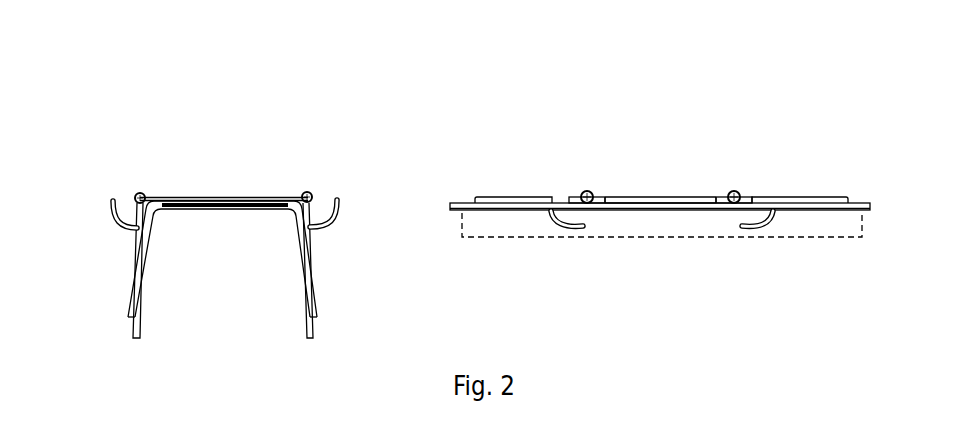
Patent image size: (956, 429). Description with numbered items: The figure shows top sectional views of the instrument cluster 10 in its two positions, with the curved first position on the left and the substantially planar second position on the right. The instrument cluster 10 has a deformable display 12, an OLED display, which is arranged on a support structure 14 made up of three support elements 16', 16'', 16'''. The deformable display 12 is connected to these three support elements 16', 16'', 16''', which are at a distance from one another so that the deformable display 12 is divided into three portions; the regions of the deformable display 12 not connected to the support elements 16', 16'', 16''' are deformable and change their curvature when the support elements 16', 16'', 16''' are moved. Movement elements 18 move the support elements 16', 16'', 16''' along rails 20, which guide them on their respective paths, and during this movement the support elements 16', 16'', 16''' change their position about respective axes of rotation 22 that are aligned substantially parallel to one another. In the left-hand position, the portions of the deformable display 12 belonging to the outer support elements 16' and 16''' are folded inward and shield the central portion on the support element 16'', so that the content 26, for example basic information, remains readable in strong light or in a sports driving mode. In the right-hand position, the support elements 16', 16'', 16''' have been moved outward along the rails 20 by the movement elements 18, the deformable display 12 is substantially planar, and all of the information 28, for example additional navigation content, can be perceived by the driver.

The instrument cluster 10 is at (153, 121).
The deformable display 12 is at (153, 317).
The support structure 14 is at (204, 190).
The support element 16' is at (579, 208).
The support element 16'' is at (422, 228).
The support element 16''' is at (317, 209).
The movement element 18 is at (150, 190).
The rail 20 is at (112, 198).
The axis of rotation 22 is at (132, 188).
The content 26 is at (228, 213).
The information 28 is at (660, 240).